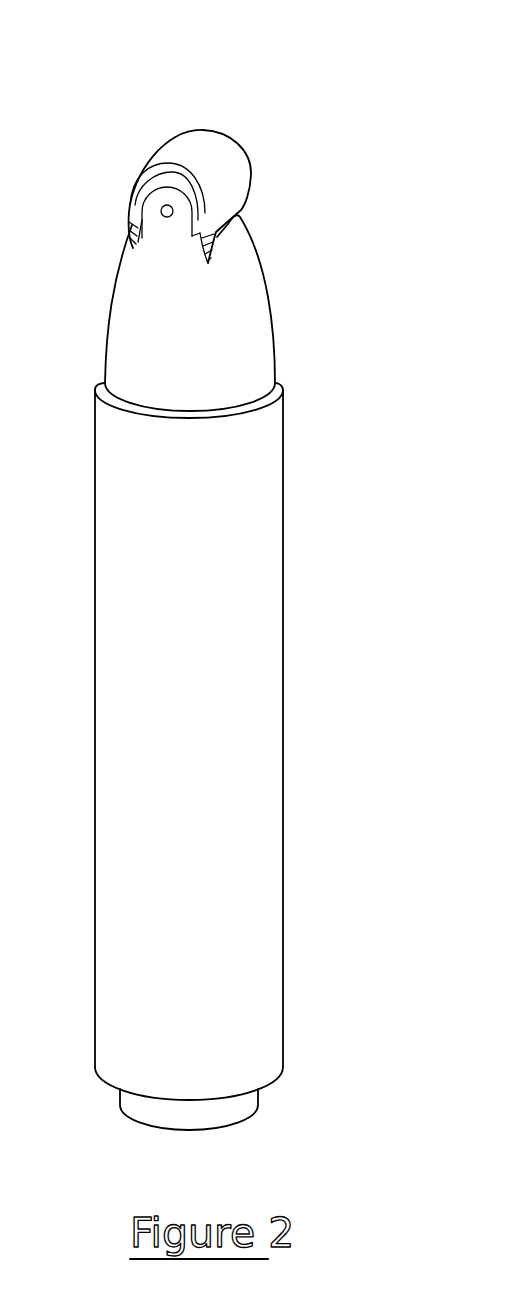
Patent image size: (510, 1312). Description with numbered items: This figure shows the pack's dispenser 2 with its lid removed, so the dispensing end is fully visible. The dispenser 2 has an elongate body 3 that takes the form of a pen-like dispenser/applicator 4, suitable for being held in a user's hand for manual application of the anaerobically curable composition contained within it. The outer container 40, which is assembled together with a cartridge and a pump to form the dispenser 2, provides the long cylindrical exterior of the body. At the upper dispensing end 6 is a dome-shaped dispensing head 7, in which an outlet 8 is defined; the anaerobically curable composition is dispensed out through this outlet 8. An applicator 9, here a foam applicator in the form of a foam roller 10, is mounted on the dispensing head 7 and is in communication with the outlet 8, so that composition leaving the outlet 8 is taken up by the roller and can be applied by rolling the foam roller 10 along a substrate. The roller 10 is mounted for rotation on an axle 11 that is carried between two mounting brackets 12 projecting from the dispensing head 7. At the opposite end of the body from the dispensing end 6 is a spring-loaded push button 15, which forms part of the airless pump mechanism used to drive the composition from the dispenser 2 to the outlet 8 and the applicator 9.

The dispenser 2 is at (255, 863).
The elongate body 3 is at (283, 977).
The pen-like dispenser/applicator 4 is at (247, 708).
The dispensing end 6 is at (279, 274).
The dispensing head 7 is at (250, 347).
The outlet 8 is at (131, 242).
The applicator 9 is at (213, 110).
The foam roller 10 is at (228, 160).
The axle 11 is at (167, 205).
The mounting brackets 12 is at (165, 236).
The spring-loaded push button 15 is at (233, 1108).
The outer container 40 is at (308, 611).